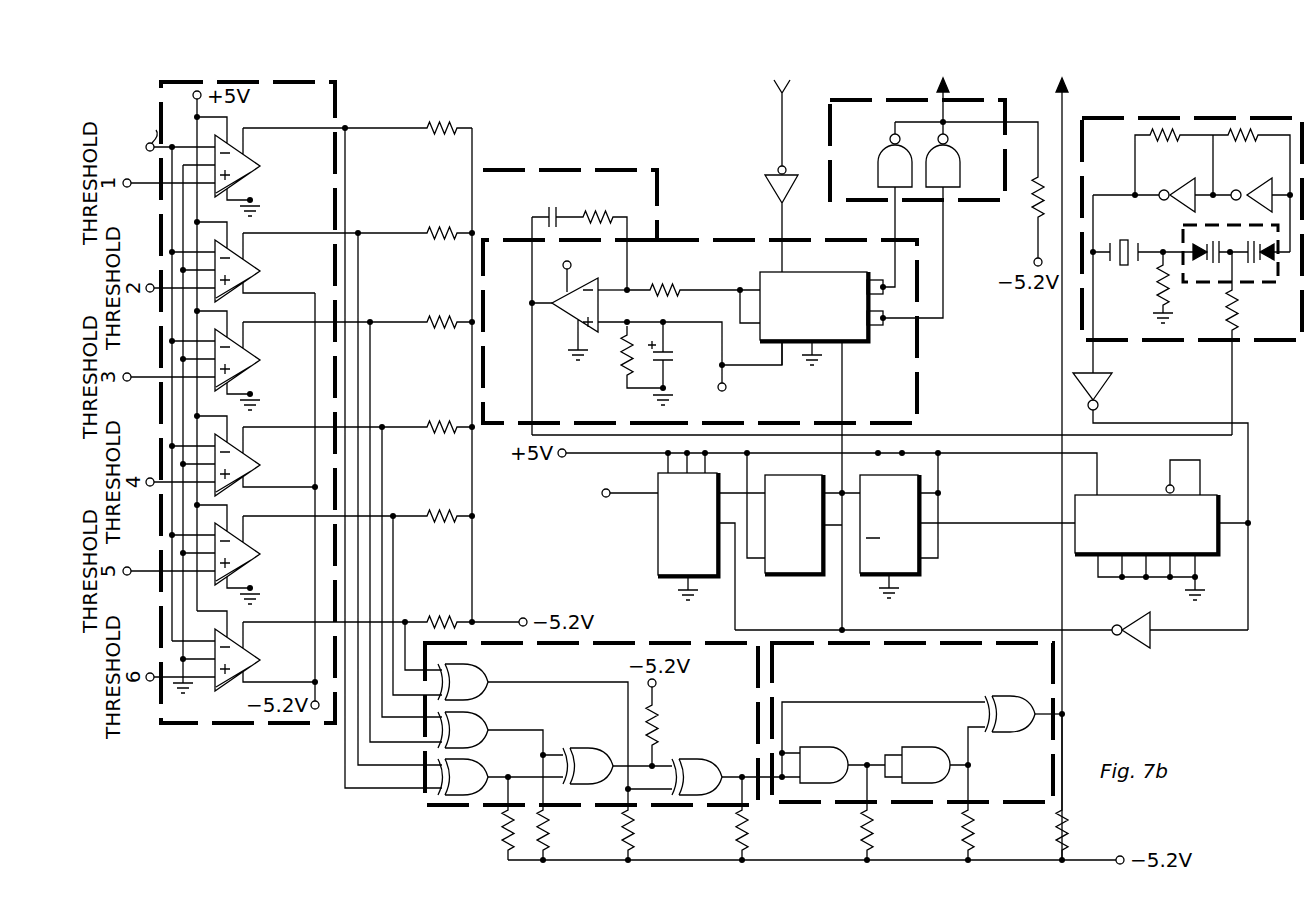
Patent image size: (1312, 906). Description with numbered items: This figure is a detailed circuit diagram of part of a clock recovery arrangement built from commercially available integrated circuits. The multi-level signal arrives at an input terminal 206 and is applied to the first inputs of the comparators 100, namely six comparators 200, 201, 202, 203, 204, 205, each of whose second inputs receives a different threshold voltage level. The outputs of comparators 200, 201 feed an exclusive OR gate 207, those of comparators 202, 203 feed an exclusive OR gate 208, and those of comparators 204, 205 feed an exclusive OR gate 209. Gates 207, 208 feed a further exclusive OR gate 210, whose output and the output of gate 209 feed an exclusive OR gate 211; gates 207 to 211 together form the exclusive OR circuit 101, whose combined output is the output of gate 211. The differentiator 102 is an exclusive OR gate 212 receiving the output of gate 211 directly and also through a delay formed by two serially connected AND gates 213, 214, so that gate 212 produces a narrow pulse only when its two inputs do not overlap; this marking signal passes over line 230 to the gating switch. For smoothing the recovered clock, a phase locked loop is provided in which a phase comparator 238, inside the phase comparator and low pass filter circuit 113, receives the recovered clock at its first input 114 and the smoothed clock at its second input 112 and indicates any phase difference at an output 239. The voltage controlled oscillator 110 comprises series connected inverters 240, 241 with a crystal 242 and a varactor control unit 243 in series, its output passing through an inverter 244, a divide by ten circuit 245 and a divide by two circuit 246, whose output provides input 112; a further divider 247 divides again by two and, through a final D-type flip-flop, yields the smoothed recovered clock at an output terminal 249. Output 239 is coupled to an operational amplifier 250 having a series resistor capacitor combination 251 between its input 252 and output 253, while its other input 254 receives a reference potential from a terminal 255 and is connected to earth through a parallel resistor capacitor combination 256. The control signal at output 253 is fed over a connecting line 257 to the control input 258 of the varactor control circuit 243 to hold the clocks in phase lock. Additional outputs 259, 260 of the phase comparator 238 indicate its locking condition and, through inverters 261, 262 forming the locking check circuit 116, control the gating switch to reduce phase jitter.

The comparators 100 is at (238, 730).
The exclusive OR circuit 101 is at (448, 808).
The differentiator 102 is at (817, 805).
The voltage controlled oscillator 110 is at (1152, 340).
The second input of phase comparator 112 is at (842, 407).
The phase comparator and low pass filter circuit 113 is at (578, 170).
The first input of phase comparator 114 is at (782, 258).
The locking check circuit 116 is at (1012, 92).
The comparator 200 is at (262, 162).
The comparator 201 is at (262, 267).
The comparator 202 is at (262, 356).
The comparator 203 is at (262, 461).
The comparator 204 is at (262, 550).
The comparator 205 is at (262, 656).
The input terminal 206 is at (145, 131).
The exclusive OR gate 207 is at (490, 764).
The exclusive OR gate 208 is at (490, 719).
The exclusive OR gate 209 is at (490, 672).
The exclusive OR gate 210 is at (585, 748).
The exclusive OR gate 211 is at (694, 758).
The exclusive OR gate 212 is at (1000, 694).
The AND gate 213 is at (815, 747).
The AND gate 214 is at (915, 747).
The line 230 is at (1063, 683).
The phase comparator 238 is at (808, 272).
The output of phase comparator 239 is at (680, 288).
The inverter 240 is at (1260, 178).
The inverter 241 is at (1183, 178).
The crystal 242 is at (1124, 266).
The varactor control unit 243 is at (1168, 285).
The inverter 244 is at (1110, 382).
The divide by 10 circuit 245 is at (1130, 495).
The divide by 2 circuit 246 is at (918, 562).
The further divider 247 is at (790, 575).
The output terminal 249 is at (604, 487).
The operational amplifier 250 is at (560, 328).
The series connected resistor capacitor combination 251 is at (558, 214).
The input of operational amplifier 252 is at (602, 286).
The output of operational amplifier 253 is at (532, 303).
The input of operational amplifier 254 is at (621, 316).
The terminal 255 is at (727, 389).
The parallel resistor capacitor combination 256 is at (674, 370).
The connecting line 257 is at (958, 435).
The control input of varactor control circuit 258 is at (1230, 337).
The additional output of phase comparator 259 is at (892, 222).
The additional output of phase comparator 260 is at (943, 222).
The inverter 261 is at (878, 163).
The inverter 262 is at (960, 162).